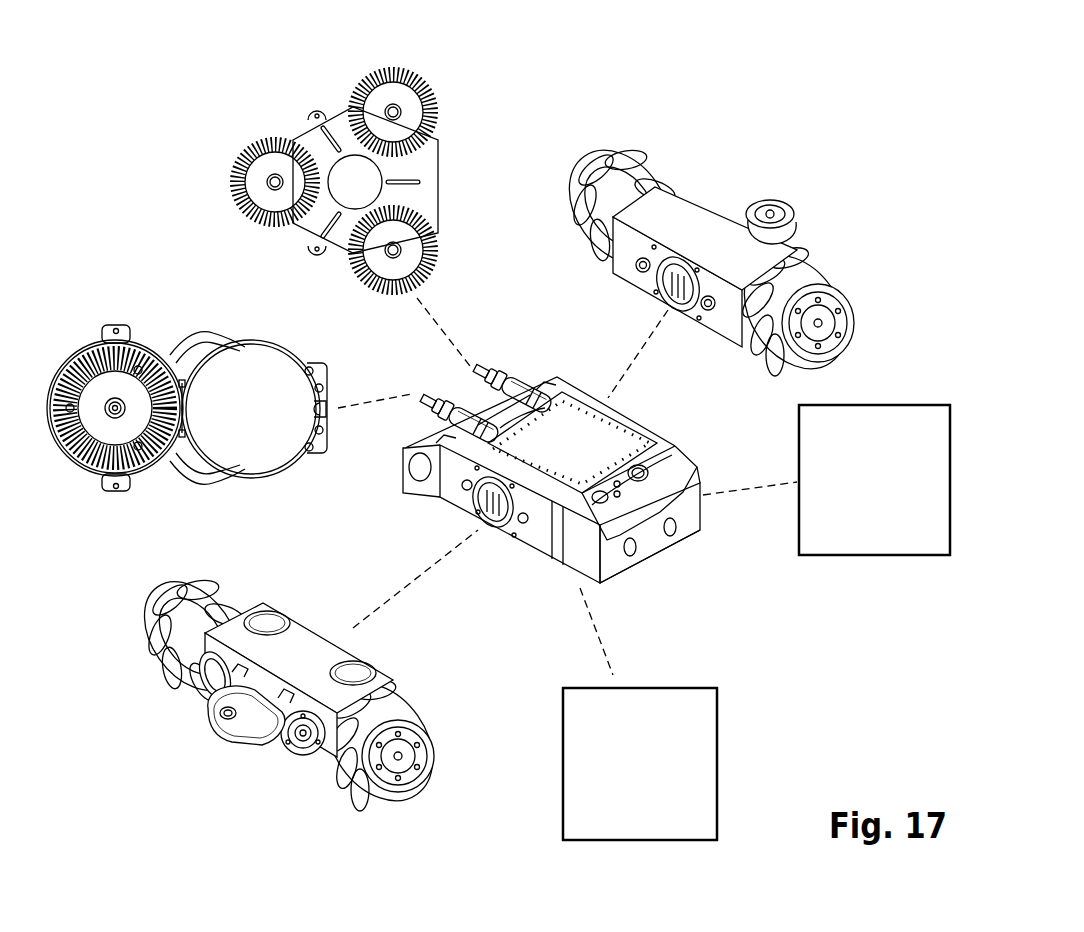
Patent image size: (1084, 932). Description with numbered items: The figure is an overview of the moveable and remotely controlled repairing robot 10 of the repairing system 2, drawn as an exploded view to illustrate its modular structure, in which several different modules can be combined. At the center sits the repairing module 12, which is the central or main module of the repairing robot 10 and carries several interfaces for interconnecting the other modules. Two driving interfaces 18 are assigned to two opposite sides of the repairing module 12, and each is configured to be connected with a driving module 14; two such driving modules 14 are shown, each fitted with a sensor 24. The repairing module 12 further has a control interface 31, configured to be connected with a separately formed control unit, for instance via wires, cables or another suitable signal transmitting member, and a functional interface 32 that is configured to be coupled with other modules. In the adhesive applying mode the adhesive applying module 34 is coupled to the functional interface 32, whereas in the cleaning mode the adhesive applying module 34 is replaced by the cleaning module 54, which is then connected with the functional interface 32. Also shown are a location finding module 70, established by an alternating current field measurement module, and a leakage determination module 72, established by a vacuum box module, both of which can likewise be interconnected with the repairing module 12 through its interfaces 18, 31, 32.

The cleaning system 2 is at (166, 102).
The repairing robot 10 is at (549, 108).
The repairing module 12 is at (544, 362).
The driving module 14 is at (716, 170).
The driving interface 18 is at (483, 543).
The sensor unit 24 is at (797, 205).
The control interface 31 is at (676, 556).
The functional interface 32 is at (446, 384).
The adhesive applying module 34 is at (150, 311).
The cleaning module 54 is at (288, 107).
The location finding module 70 is at (717, 760).
The leakage determination module 72 is at (873, 556).